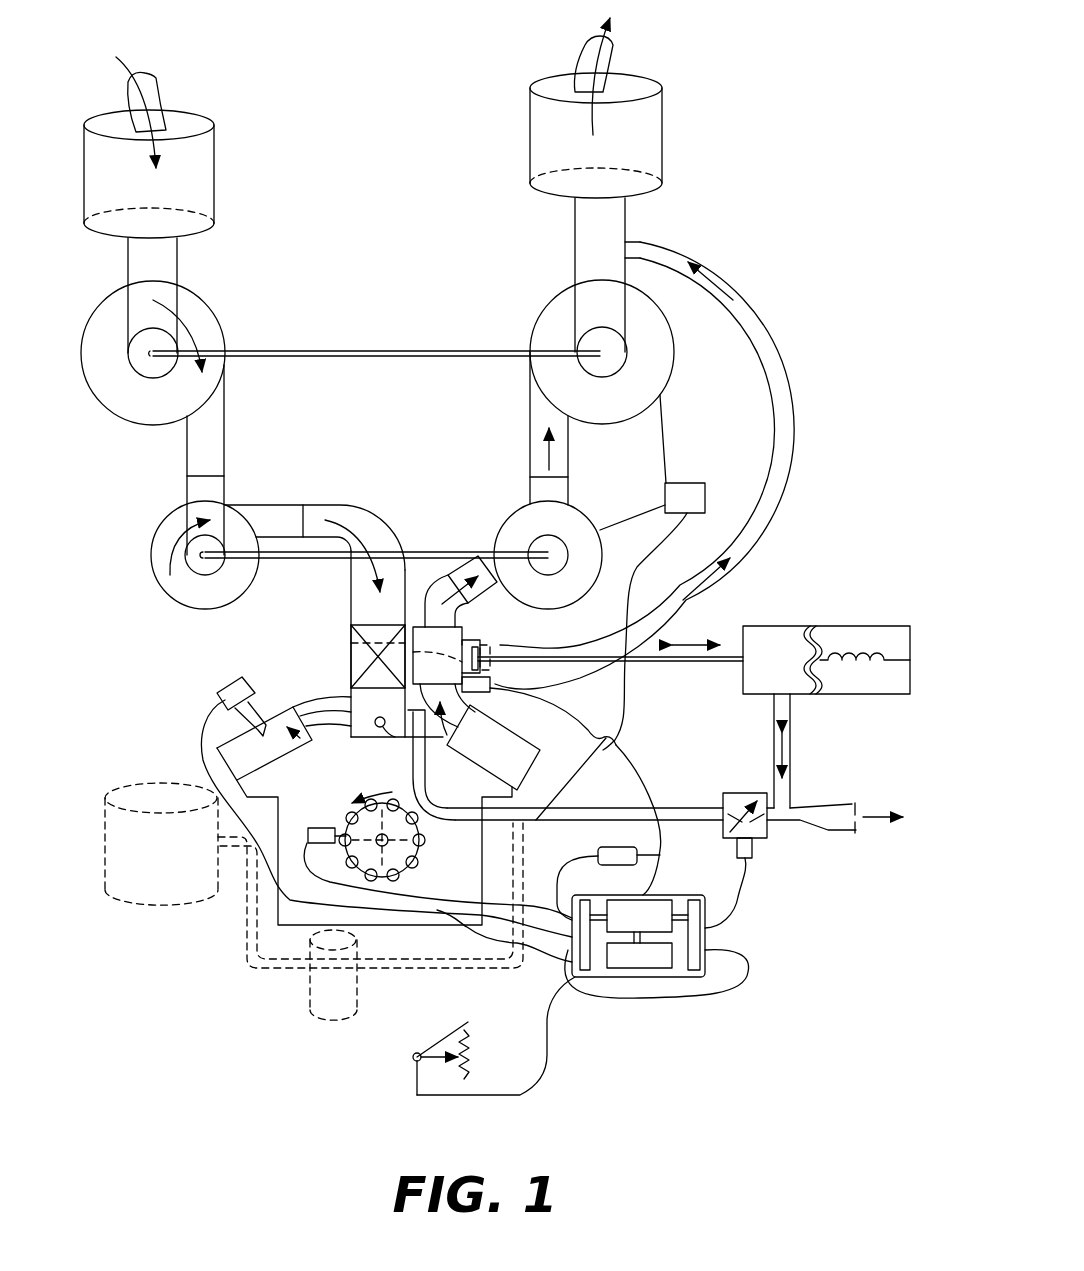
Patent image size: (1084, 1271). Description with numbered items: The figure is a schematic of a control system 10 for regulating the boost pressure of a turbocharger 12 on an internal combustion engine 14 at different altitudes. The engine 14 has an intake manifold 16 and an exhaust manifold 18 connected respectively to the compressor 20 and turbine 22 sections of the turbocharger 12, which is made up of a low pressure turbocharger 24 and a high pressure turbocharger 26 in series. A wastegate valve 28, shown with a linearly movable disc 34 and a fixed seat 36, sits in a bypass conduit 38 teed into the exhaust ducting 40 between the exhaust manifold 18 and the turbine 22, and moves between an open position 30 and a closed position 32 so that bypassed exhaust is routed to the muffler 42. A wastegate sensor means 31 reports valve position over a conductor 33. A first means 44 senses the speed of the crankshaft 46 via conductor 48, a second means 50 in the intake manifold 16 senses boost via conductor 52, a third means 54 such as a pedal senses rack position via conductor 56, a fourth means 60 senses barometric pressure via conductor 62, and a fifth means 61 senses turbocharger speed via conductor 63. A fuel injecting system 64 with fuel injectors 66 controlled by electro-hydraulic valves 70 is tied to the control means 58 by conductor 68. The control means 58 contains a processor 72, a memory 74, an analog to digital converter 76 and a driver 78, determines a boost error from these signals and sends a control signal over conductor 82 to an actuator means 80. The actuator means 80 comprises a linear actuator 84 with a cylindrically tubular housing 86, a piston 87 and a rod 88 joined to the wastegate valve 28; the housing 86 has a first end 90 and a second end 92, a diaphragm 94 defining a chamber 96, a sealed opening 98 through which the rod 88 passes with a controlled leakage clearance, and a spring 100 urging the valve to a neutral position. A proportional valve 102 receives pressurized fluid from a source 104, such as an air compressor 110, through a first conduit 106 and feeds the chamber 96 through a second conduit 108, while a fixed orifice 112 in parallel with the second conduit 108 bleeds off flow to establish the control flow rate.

The control system 10 is at (757, 572).
The turbocharger 12 is at (735, 152).
The internal combustion engine 14 is at (518, 788).
The intake manifold 16 is at (350, 690).
The exhaust manifold 18 is at (470, 707).
The compressor section 20 is at (220, 375).
The turbine section 22 is at (540, 370).
The low pressure turbocharger 24 is at (94, 395).
The high pressure turbocharger 26 is at (162, 588).
The wastegate valve 28 is at (510, 650).
The open position 30 is at (497, 648).
The wastegate sensor means 31 is at (490, 692).
The closed position 32 is at (352, 643).
The conductor 33 is at (614, 758).
The linearly movable disc 34 is at (503, 687).
The fixed seat 36 is at (455, 627).
The bypass conduit 38 is at (783, 350).
The exhaust ducting 40 is at (627, 220).
The muffler 42 is at (540, 137).
The first means 44 is at (320, 828).
The crankshaft 46 is at (390, 848).
The conductor 48 is at (350, 888).
The second means 50 is at (376, 726).
The conductor 52 is at (402, 757).
The third means 54 is at (410, 1082).
The conductor 56 is at (548, 1062).
The control means 58 is at (652, 956).
The fourth means 60 is at (660, 854).
The fifth means 61 is at (690, 488).
The conductor 62 is at (597, 855).
The conductor 63 is at (632, 585).
The fuel injecting system 64 is at (160, 714).
The fuel injector 66 is at (258, 702).
The conductor 68 is at (203, 752).
The electro-hydraulic valve 70 is at (240, 683).
The processor 72 is at (655, 910).
The memory 74 is at (633, 960).
The analog to digital converter 76 is at (585, 970).
The driver 78 is at (695, 970).
The actuator means 80 is at (836, 843).
The conductor 82 is at (730, 927).
The linear actuator 84 is at (803, 635).
The cylindrically tubular housing 86 is at (848, 695).
The piston 87 is at (820, 697).
The rod 88 is at (640, 663).
The first end 90 is at (740, 703).
The second end 92 is at (910, 680).
The diaphragm 94 is at (820, 626).
The chamber 96 is at (765, 637).
The sealed opening 98 is at (740, 664).
The spring 100 is at (873, 650).
The proportional valve 102 is at (742, 793).
The source of pressurized fluid flow 104 is at (222, 977).
The first conduit 106 is at (583, 810).
The second conduit 108 is at (793, 785).
The air compressor 110 is at (118, 895).
The fixed orifice 112 is at (855, 806).